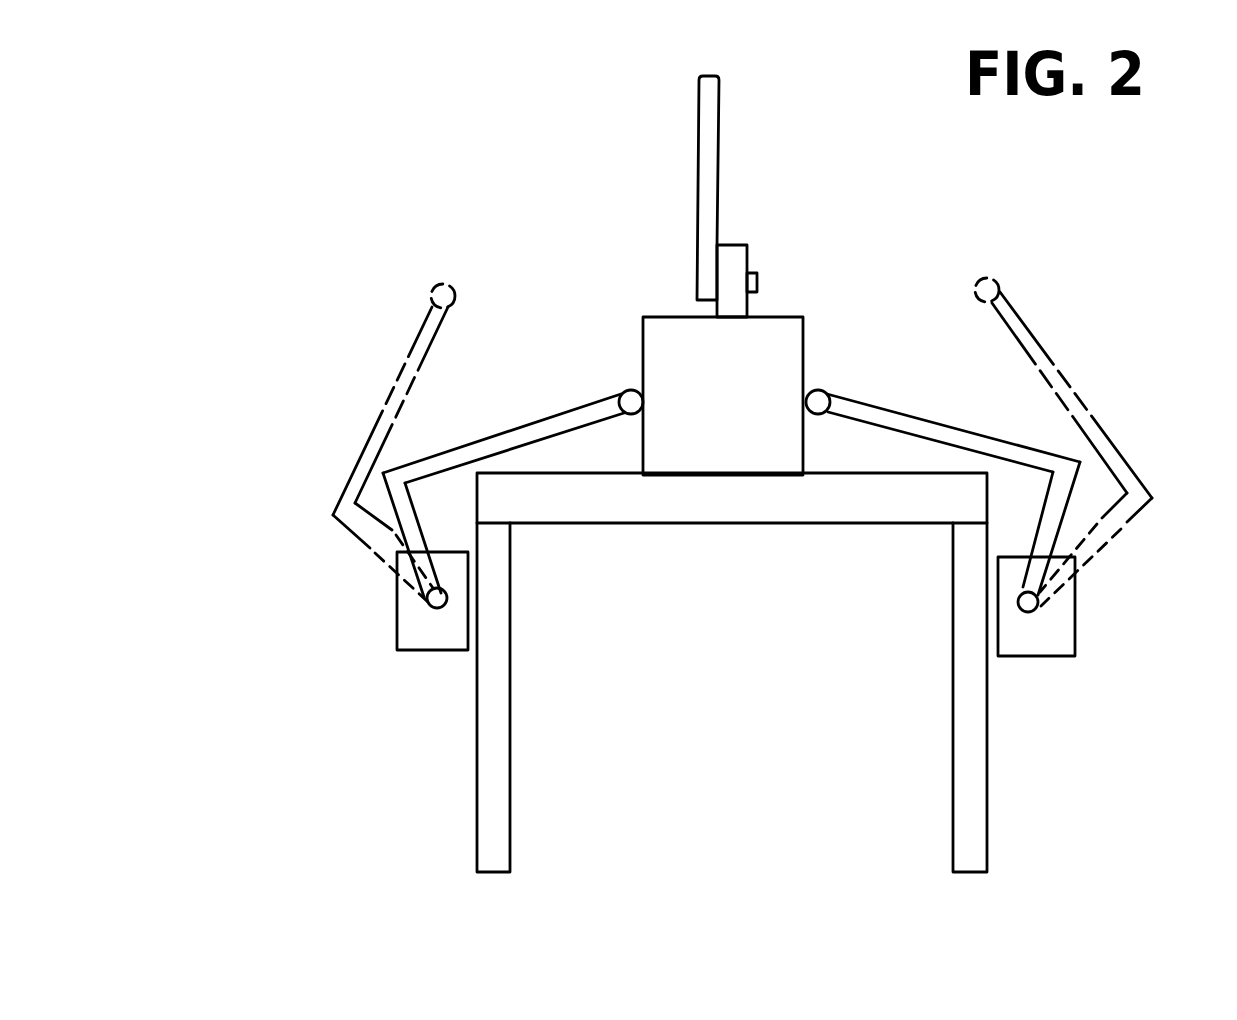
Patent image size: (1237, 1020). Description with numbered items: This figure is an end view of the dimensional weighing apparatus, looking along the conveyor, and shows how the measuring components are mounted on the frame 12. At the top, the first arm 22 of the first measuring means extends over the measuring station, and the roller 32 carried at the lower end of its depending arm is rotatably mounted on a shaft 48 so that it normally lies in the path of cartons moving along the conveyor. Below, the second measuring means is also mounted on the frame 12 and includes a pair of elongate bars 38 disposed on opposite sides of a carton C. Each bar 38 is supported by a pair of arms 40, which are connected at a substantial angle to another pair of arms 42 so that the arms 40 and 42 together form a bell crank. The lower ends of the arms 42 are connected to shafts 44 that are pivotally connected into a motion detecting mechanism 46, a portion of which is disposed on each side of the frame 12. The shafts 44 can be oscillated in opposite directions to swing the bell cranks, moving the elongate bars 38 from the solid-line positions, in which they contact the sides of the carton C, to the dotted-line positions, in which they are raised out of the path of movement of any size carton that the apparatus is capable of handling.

The frame 12 is at (1022, 766).
The first arm 22 is at (699, 133).
The roller 32 is at (738, 245).
The elongate bars 38 is at (807, 385).
The arms 40 is at (372, 432).
The arms 42 is at (392, 512).
The shafts 44 is at (436, 607).
The motion detecting mechanism 46 is at (410, 657).
The shaft 48 is at (757, 283).
The carton C is at (643, 348).